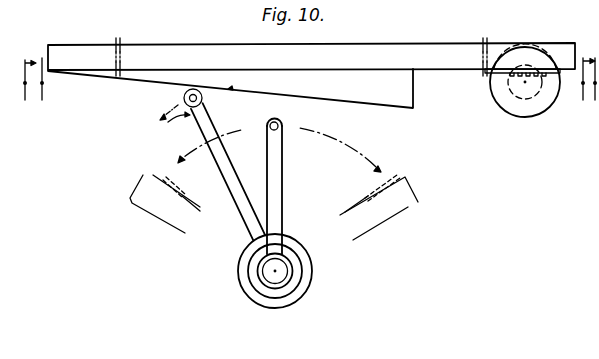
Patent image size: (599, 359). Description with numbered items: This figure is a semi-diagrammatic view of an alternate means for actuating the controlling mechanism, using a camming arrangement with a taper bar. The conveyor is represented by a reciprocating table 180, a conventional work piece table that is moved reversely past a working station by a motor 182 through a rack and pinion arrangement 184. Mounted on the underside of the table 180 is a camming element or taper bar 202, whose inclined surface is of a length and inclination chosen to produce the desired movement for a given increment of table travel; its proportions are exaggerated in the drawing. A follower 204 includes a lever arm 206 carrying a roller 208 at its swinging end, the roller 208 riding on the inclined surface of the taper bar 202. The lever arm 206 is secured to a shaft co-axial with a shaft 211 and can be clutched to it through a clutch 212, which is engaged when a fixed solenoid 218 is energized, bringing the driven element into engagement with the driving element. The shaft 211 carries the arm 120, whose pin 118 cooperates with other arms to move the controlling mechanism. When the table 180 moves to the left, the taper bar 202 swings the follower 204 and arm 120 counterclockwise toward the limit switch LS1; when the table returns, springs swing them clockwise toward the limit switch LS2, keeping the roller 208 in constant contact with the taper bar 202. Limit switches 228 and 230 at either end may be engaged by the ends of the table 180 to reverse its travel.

The reciprocating table 180 is at (142, 40).
The taper bar 202 is at (413, 103).
The limit switch 228 is at (18, 73).
The limit switch 230 is at (589, 100).
The motor 182 is at (528, 117).
The rack and pinion arrangement 184 is at (528, 66).
The roller 208 is at (182, 97).
The follower 204 is at (268, 138).
The lever arm 206 is at (230, 170).
The arm 120 is at (282, 167).
The pin 118 is at (280, 127).
The fixed solenoid 218 is at (296, 284).
The clutch 212 is at (300, 292).
The shaft 211 is at (283, 271).
The limit switch LS1 is at (131, 195).
The limit switch LS2 is at (418, 206).